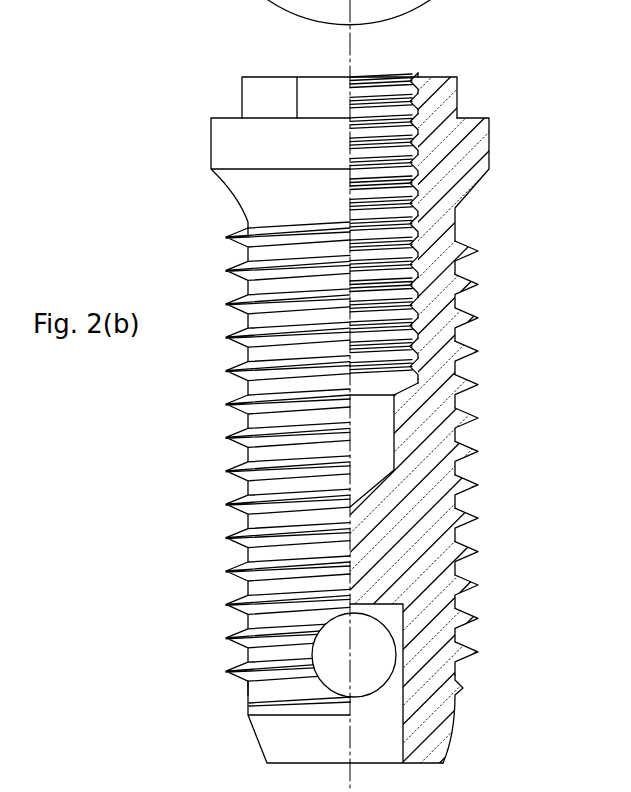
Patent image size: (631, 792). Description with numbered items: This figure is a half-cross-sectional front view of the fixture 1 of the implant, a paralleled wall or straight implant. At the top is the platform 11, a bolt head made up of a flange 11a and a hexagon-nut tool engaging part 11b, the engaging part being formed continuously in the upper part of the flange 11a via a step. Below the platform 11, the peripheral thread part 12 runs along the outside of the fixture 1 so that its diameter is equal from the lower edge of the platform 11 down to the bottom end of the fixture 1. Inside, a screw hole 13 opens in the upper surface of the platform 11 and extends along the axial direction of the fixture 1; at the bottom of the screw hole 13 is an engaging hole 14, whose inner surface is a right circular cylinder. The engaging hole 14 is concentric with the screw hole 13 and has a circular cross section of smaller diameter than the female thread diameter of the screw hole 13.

The fixture 1 is at (207, 118).
The platform 11 is at (490, 123).
The flange 11a is at (490, 147).
The hexagon-nut tool engaging part 11b is at (458, 88).
The peripheral thread part 12 is at (457, 287).
The screw hole 13 is at (412, 223).
The engaging hole 14 is at (393, 463).